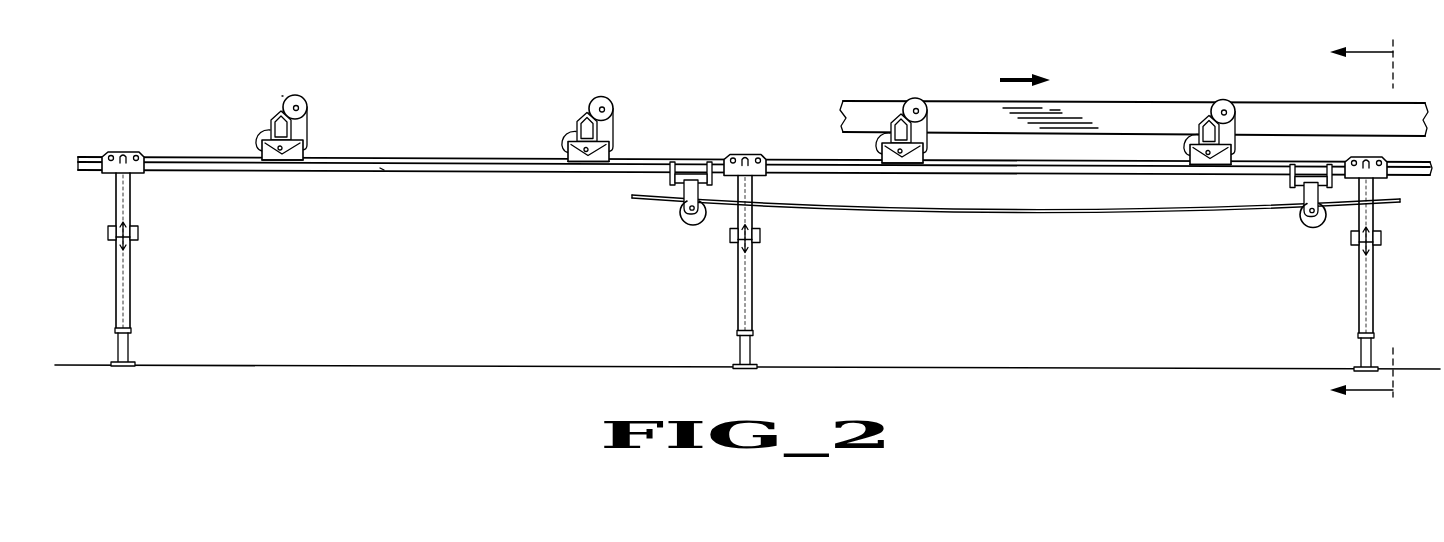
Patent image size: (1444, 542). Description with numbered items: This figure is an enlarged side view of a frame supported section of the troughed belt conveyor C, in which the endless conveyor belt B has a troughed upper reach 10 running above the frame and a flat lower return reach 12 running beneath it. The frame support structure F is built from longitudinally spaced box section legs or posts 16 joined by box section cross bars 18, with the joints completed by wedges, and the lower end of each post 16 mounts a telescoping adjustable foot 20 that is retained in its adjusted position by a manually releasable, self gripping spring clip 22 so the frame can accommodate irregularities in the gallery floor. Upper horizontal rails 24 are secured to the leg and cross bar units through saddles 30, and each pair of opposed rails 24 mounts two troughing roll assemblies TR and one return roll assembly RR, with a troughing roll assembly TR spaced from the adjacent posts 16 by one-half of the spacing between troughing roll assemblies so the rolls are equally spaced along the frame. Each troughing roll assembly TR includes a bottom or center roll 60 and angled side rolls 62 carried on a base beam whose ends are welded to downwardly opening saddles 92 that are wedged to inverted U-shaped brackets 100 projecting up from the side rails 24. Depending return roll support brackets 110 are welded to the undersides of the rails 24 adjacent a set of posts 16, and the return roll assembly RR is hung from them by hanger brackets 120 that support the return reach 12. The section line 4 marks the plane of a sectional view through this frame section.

The upper reach 10 is at (1128, 100).
The lower return reach 12 is at (1062, 210).
The leg or post 16 is at (131, 262).
The cross bar 18 is at (139, 242).
The telescoping adjustable foot 20 is at (131, 346).
The spring clip 22 is at (131, 330).
The upper horizontal rail 24 is at (420, 156).
The saddle 30 is at (124, 152).
The bottom or center roll 60 is at (253, 142).
The angled side roll 62 is at (322, 87).
The saddle 92 is at (306, 140).
The bracket 100 is at (264, 161).
The return roll support bracket 110 is at (672, 178).
The hanger bracket 120 is at (681, 203).
The return roll assembly RR is at (685, 223).
The troughing roll assembly TR is at (267, 107).
The frame support structure F is at (386, 173).
The conveyor belt B is at (1097, 101).
The troughed belt conveyor C is at (980, 90).
The section line 4- 4 is at (1361, 220).